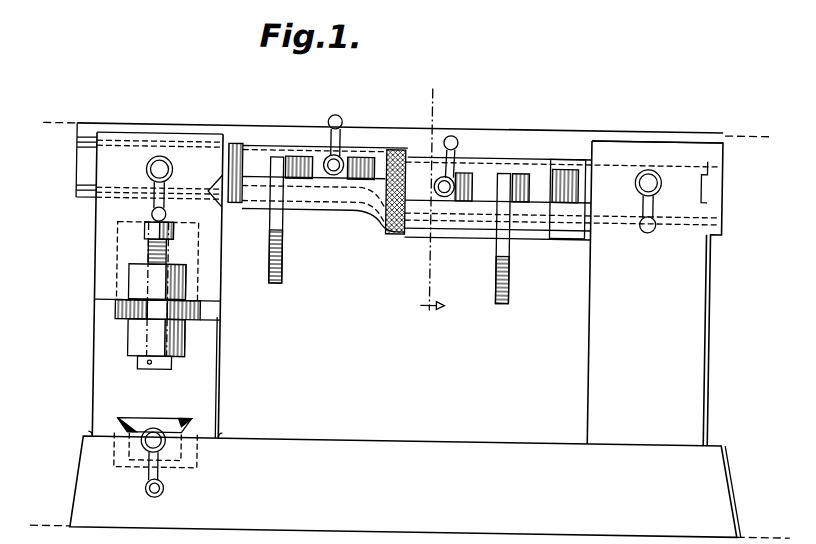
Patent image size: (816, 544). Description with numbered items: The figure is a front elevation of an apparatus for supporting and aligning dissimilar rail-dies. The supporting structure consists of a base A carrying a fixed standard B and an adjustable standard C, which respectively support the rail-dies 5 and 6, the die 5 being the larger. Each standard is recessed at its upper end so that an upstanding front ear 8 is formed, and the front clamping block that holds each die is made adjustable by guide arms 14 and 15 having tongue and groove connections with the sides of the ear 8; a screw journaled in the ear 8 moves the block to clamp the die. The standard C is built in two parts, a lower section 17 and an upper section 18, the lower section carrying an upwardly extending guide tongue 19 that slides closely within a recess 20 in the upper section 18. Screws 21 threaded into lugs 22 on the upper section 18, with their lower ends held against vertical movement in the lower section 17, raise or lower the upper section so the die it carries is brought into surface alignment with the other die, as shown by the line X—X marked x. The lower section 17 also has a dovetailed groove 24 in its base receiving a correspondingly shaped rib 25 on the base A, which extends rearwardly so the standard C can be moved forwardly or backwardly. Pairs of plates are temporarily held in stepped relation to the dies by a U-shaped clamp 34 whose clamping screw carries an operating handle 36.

The rail-die 5 is at (406, 131).
The rail-die 6 is at (302, 130).
The front ear 8 is at (183, 158).
The guide arm 14 is at (94, 171).
The guide arm 15 is at (206, 194).
The lower section 17 is at (206, 367).
The upper section 18 is at (208, 275).
The guide tongue 19 is at (200, 315).
The recess 20 is at (125, 244).
The screw 21 is at (142, 232).
The lug 22 is at (165, 288).
The dovetailed groove 24 is at (165, 422).
The rib 25 is at (98, 433).
The clamp 34 is at (283, 272).
The operating handle 36 is at (340, 121).
The base A is at (410, 486).
The fixed standard B is at (697, 295).
The adjustable standard C is at (103, 334).
The line X—X x is at (406, 129).